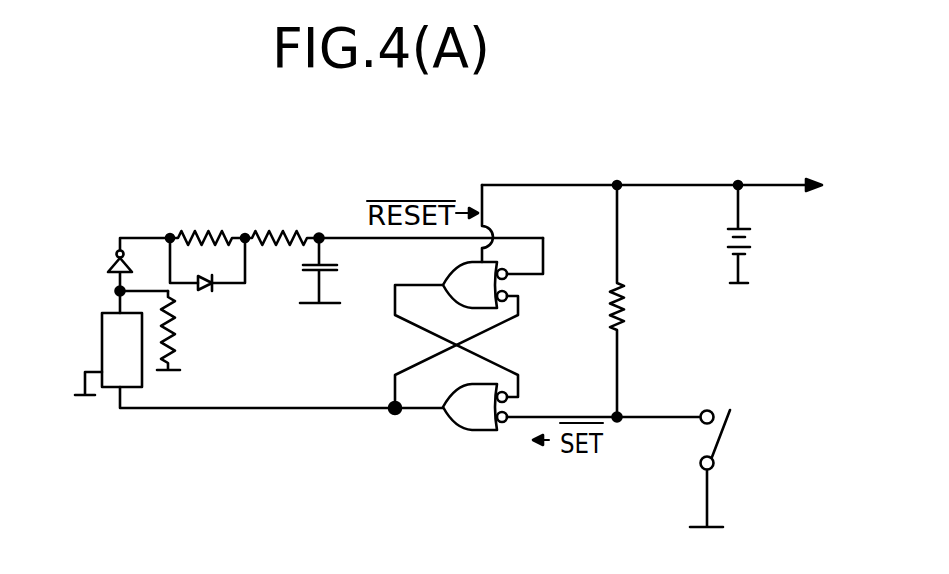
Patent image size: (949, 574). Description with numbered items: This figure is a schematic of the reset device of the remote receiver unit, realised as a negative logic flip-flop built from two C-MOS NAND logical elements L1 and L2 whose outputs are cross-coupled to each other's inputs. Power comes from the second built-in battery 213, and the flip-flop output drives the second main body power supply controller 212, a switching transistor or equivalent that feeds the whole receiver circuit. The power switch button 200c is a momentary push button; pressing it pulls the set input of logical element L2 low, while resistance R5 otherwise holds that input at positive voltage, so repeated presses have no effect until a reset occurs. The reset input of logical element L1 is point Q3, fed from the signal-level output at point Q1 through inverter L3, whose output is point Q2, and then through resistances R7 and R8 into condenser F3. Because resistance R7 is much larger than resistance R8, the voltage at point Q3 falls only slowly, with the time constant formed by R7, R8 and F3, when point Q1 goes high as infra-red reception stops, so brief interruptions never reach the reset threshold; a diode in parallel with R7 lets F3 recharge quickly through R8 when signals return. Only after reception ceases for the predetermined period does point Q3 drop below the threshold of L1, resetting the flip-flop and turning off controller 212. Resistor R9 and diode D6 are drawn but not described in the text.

The point Q1 is at (115, 294).
The point Q2 is at (115, 252).
The point Q3 is at (320, 232).
The inverter L3 is at (92, 270).
The resistance R7 is at (207, 221).
The resistance R8 is at (282, 221).
The resistor R9 is at (187, 330).
The diode D6 is at (207, 283).
The condenser F3 is at (338, 270).
The logical element L1 is at (469, 323).
The logical element L2 is at (503, 407).
The resistance R5 is at (640, 301).
The second main body power supply controller 212 is at (682, 188).
The second built-in battery 213 is at (757, 240).
The power switch button 200c is at (723, 433).